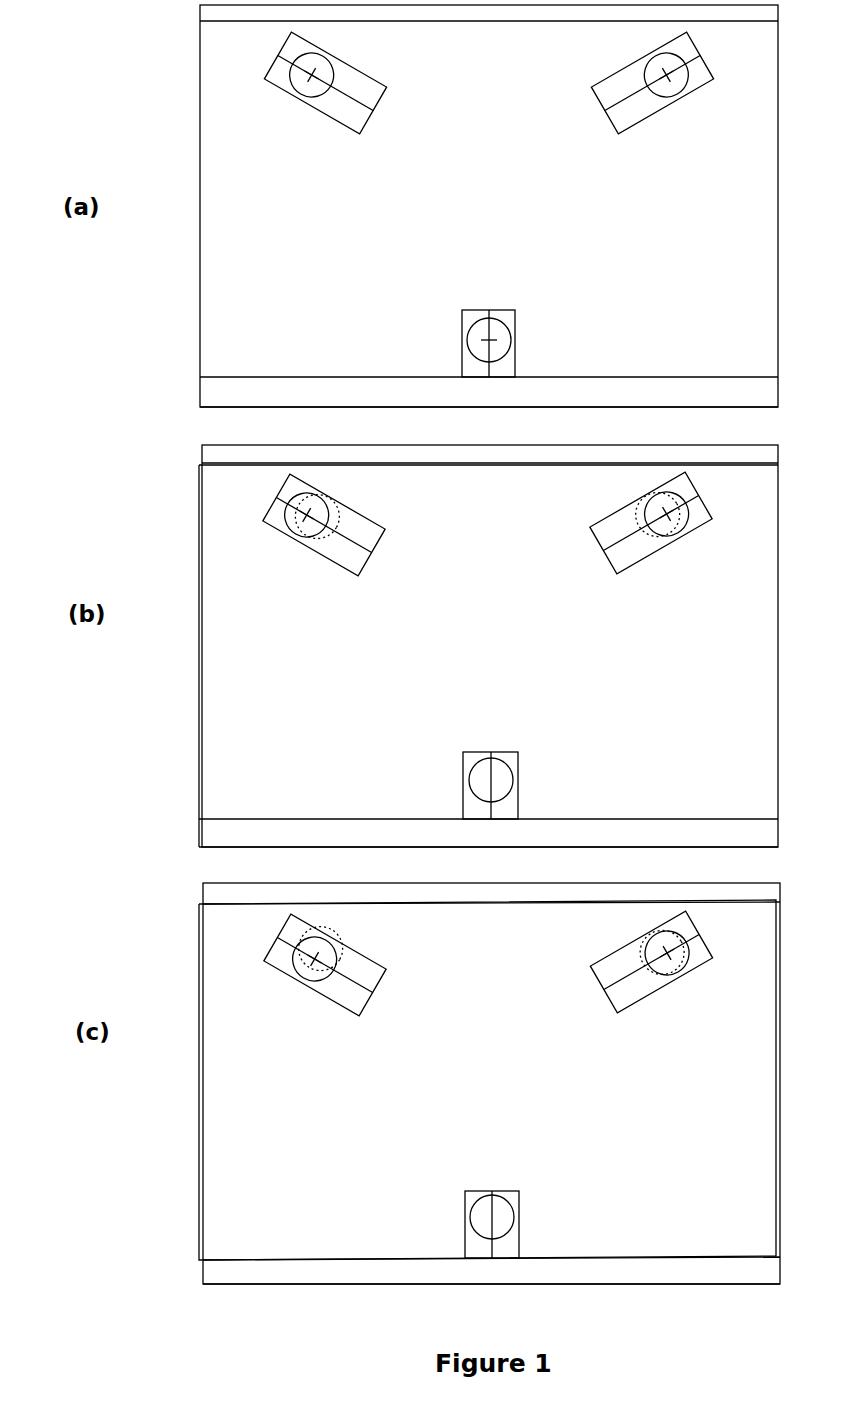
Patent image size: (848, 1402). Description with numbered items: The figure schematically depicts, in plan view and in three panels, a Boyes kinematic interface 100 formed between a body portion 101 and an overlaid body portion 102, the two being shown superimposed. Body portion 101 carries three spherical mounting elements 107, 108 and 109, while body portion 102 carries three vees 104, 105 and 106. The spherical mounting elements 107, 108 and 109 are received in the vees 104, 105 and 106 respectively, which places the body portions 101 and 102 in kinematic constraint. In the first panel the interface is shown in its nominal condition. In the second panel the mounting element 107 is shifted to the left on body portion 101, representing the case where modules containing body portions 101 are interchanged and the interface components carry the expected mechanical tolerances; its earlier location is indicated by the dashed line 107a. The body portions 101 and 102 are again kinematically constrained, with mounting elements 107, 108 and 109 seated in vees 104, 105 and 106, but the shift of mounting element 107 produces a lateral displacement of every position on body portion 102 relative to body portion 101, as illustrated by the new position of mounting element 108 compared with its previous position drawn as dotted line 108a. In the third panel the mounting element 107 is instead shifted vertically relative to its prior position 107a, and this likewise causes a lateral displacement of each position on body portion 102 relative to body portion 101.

The Boyes kinematic interface 100 is at (150, 50).
The body portion 101 is at (212, 392).
The body portion 102 is at (232, 321).
The vee 104 is at (337, 107).
The vee 105 is at (638, 107).
The vee 106 is at (502, 368).
The spherical mounting element 107 is at (302, 88).
The previous position of mounting element 107 107a is at (337, 508).
The spherical mounting element 108 is at (673, 88).
The previous position of mounting element 108 108a is at (683, 493).
The spherical mounting element 109 is at (493, 330).